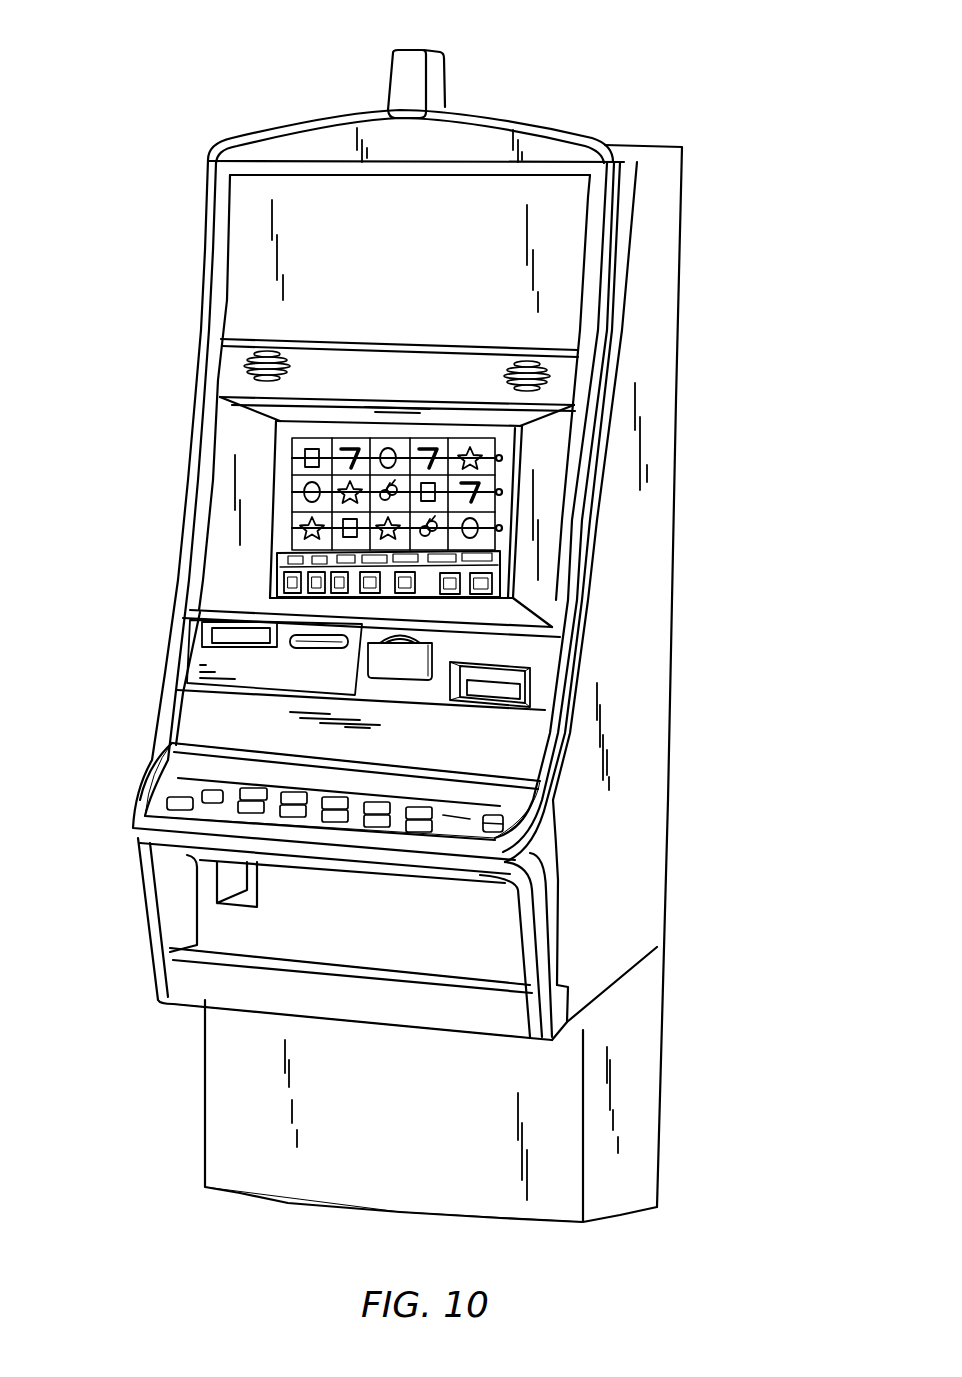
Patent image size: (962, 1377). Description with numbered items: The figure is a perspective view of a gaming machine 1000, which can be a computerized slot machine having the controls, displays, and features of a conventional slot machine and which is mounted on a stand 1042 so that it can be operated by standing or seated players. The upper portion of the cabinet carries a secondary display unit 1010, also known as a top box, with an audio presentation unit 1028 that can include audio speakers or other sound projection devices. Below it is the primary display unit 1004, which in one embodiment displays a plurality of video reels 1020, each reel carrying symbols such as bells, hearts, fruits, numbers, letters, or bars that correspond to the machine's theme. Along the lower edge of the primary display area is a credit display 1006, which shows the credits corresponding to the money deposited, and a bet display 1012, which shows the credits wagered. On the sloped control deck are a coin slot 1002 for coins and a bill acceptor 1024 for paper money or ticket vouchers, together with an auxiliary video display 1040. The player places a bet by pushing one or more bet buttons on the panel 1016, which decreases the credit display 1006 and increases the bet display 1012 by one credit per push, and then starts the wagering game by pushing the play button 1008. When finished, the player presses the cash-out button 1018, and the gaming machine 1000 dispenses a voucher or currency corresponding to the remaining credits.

The gaming machine 1000 is at (130, 12).
The coin slot 1002 is at (433, 647).
The primary display unit 1004 is at (433, 432).
The credit display 1006 is at (277, 565).
The play button 1008 is at (500, 833).
The secondary display unit 1010 is at (562, 277).
The bet display 1012 is at (505, 598).
The bet button panel 1016 is at (228, 802).
The cash-out button 1018 is at (167, 787).
The video reels 1020 is at (415, 455).
The bill acceptor 1024 is at (530, 700).
The audio presentation unit 1028 is at (545, 371).
The auxiliary video display 1040 is at (193, 713).
The stand 1042 is at (205, 1093).